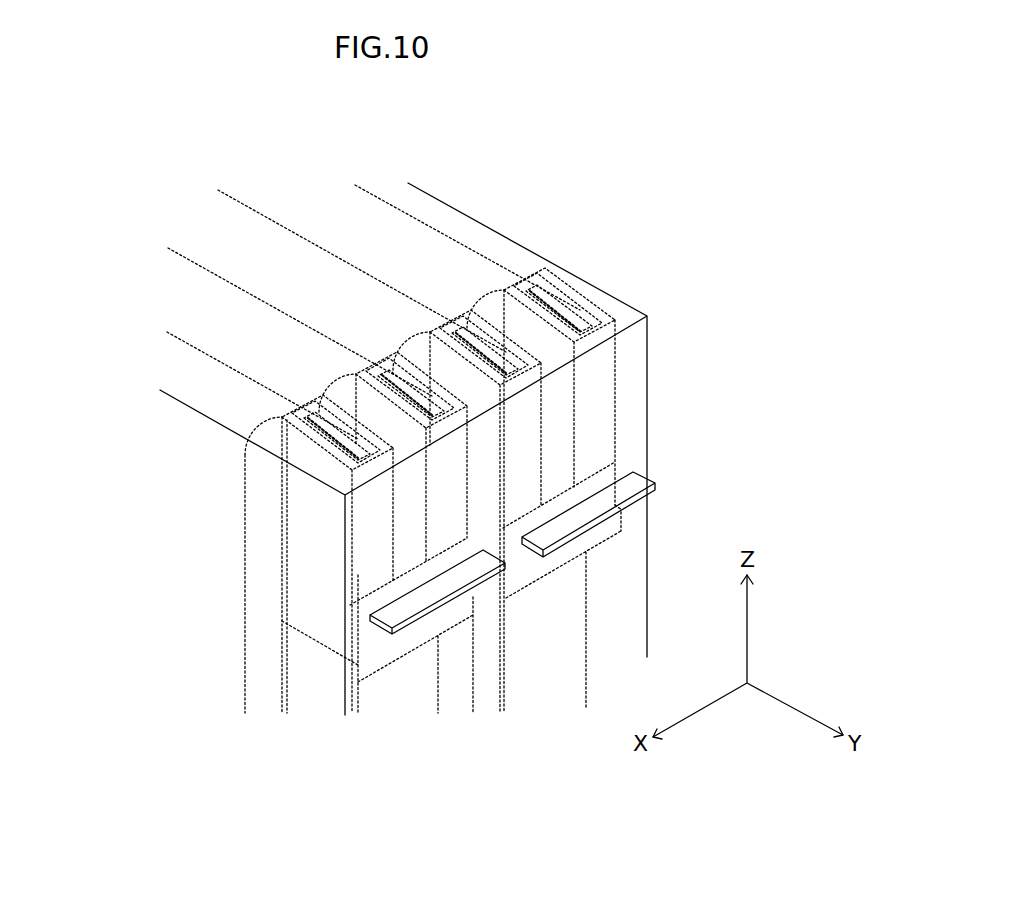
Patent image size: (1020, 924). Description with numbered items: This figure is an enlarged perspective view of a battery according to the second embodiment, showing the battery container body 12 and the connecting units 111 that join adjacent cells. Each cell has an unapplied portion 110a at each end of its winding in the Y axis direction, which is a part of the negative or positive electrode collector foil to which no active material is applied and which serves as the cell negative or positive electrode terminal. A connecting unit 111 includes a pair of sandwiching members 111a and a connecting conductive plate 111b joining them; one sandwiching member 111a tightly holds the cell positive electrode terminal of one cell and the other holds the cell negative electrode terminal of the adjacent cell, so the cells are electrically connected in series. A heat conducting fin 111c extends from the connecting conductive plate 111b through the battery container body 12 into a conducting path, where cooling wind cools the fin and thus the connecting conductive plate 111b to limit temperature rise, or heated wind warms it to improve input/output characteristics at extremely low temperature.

The battery container body 12 is at (215, 477).
The connecting unit 111 is at (302, 538).
The sandwiching member 111a is at (305, 587).
The connecting conductive plate 111b is at (368, 612).
The heat conducting fin 111c is at (407, 605).
The unapplied portion 110a is at (332, 433).